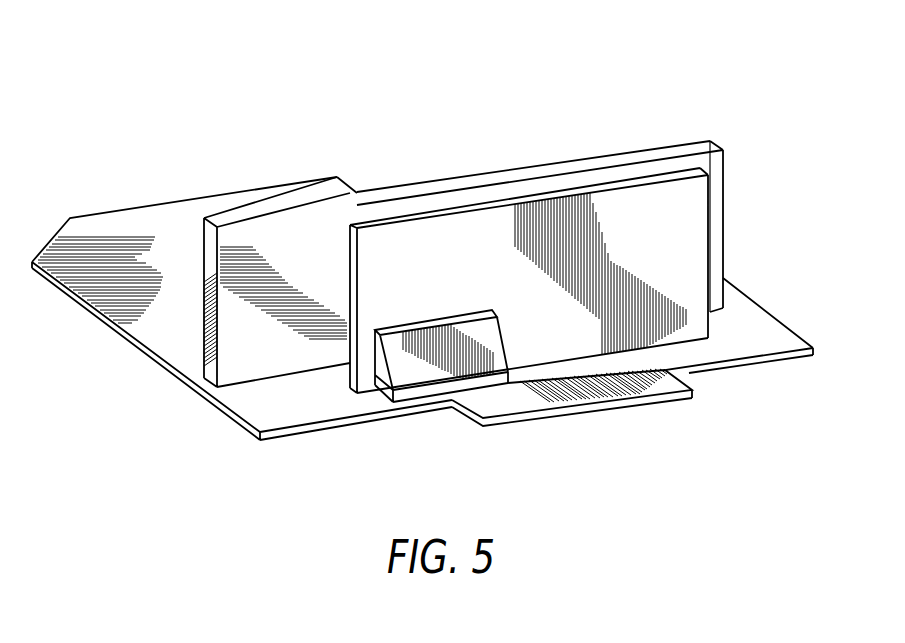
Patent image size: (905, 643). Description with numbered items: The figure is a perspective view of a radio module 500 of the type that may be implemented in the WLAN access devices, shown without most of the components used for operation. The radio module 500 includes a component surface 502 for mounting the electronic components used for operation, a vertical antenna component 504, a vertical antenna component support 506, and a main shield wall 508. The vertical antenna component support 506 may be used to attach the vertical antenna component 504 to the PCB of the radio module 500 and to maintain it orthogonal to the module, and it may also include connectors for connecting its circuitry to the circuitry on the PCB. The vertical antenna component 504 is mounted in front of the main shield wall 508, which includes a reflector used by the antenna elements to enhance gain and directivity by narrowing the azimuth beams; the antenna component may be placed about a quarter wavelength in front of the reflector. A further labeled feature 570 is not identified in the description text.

The radio module 500 is at (259, 138).
The component surface 502 is at (110, 232).
The vertical antenna component 504 is at (647, 312).
The vertical antenna component support 506 is at (417, 367).
The main shield wall 508 is at (278, 337).
The tab 570 is at (487, 413).